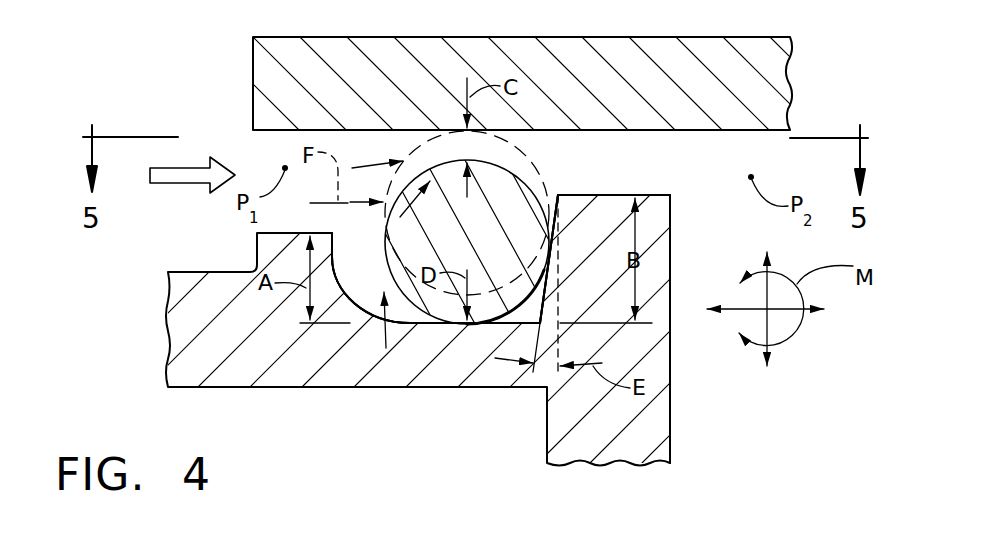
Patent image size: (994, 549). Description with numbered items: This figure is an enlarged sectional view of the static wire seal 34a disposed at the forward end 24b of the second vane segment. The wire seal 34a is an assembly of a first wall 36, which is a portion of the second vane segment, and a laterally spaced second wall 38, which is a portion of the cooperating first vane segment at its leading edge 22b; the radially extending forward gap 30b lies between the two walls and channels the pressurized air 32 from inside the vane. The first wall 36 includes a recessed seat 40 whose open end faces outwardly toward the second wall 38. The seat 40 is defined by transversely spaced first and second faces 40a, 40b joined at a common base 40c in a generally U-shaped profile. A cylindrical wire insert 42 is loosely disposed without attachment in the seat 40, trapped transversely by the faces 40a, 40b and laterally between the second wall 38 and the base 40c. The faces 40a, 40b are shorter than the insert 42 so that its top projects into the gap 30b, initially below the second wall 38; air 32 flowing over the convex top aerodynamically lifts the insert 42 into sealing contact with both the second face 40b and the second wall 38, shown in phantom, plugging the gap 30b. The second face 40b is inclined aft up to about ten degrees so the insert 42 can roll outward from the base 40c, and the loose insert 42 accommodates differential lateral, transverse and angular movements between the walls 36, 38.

The leading edge 22b is at (563, 37).
The second wall 38 is at (650, 131).
The forward gap 30b is at (632, 173).
The first wall 36 is at (618, 195).
The pressurized air 32 is at (172, 183).
The wire seal 34a is at (383, 390).
The forward end 24b is at (672, 426).
The seat 40 is at (386, 345).
The first face 40a is at (340, 276).
The second face 40b is at (545, 297).
The base 40c is at (485, 326).
The insert 42 is at (486, 243).